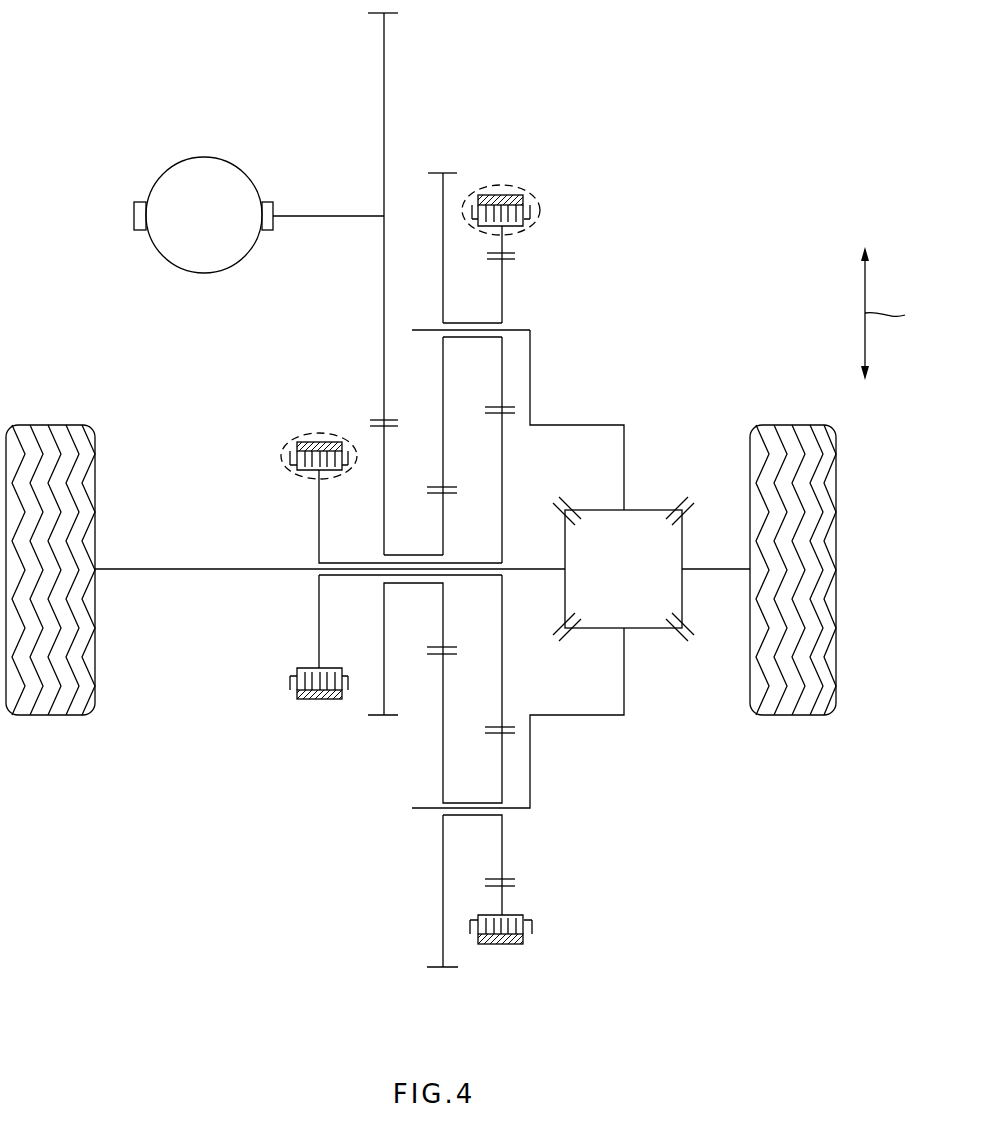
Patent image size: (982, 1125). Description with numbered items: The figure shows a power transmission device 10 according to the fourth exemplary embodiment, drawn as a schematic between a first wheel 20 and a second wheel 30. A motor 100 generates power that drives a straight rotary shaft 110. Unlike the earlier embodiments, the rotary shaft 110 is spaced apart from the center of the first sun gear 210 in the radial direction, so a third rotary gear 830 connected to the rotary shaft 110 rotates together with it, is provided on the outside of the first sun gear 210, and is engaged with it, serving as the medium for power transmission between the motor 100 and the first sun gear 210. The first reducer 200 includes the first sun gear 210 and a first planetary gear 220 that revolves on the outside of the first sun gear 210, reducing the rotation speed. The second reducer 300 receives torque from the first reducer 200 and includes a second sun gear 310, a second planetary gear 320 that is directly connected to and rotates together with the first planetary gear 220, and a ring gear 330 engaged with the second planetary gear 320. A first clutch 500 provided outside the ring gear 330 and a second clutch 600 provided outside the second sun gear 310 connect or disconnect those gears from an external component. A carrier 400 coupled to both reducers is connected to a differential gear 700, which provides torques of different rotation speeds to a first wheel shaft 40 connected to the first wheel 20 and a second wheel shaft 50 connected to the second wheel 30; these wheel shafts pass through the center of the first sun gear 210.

The power transmission device 10 is at (68, 26).
The first wheel 20 is at (49, 424).
The second wheel 30 is at (792, 424).
The first wheel shaft 40 is at (131, 571).
The second wheel shaft 50 is at (718, 571).
The motor 100 is at (197, 146).
The rotary shaft 110 is at (302, 218).
The first reducer 200 is at (424, 383).
The first sun gear 210 is at (384, 517).
The first planetary gear 220 is at (443, 195).
The second reducer 300 is at (513, 356).
The second sun gear 310 is at (502, 453).
The second planetary gear 320 is at (502, 283).
The ring gear 330 is at (502, 249).
The carrier 400 is at (530, 390).
The first clutch 500 is at (537, 200).
The second clutch 600 is at (290, 443).
The differential gear 700 is at (655, 510).
The third rotary gear 830 is at (384, 240).